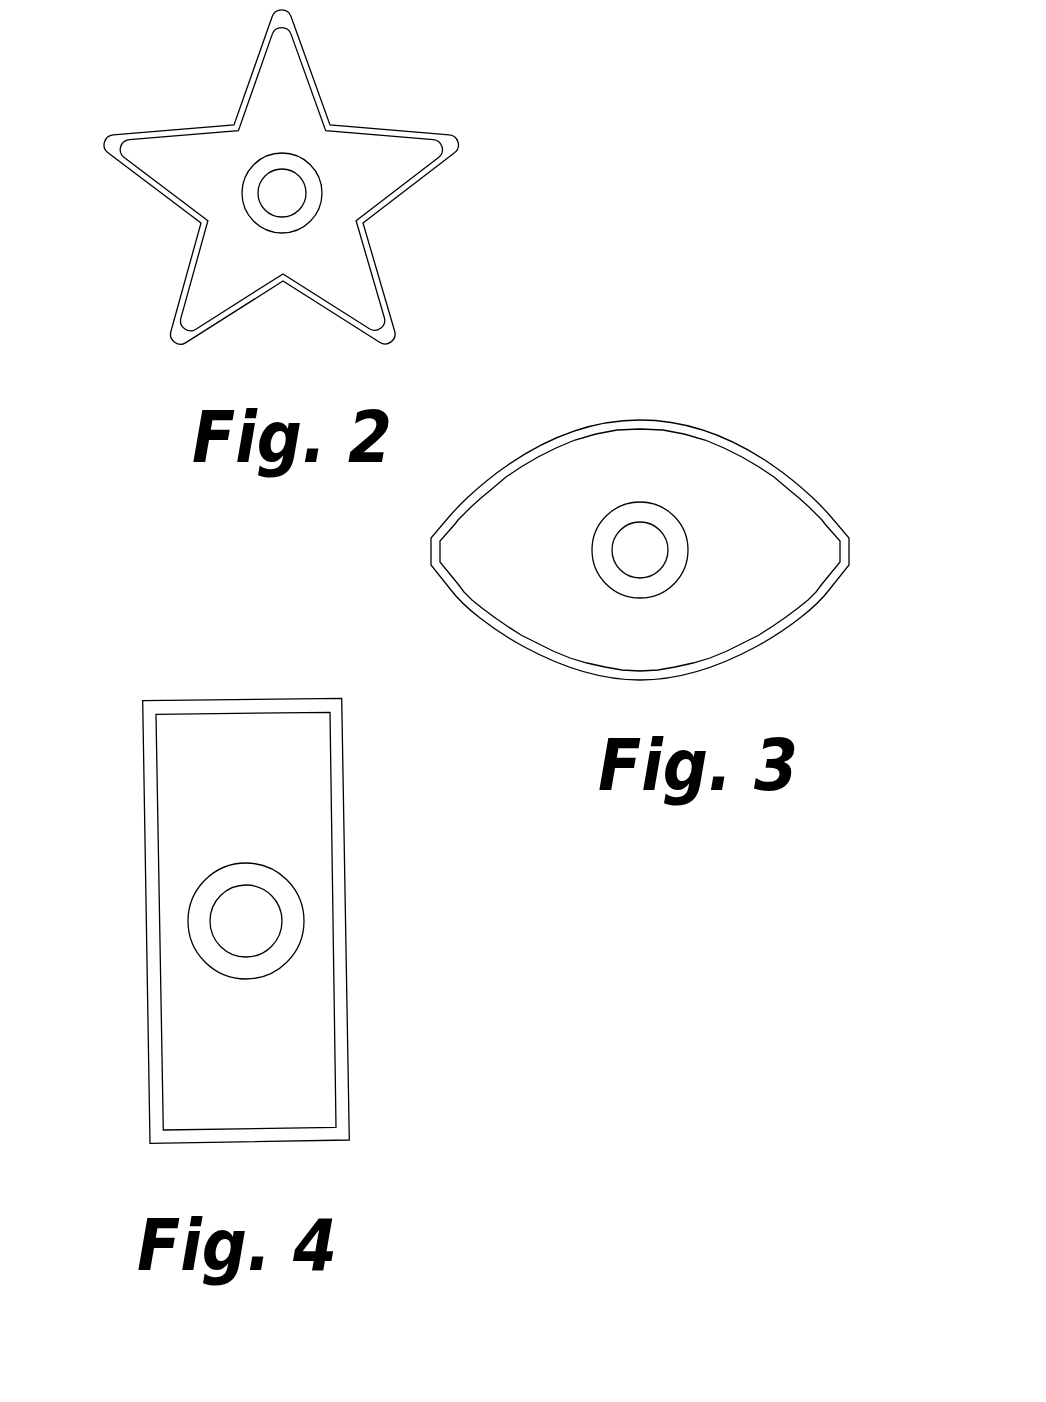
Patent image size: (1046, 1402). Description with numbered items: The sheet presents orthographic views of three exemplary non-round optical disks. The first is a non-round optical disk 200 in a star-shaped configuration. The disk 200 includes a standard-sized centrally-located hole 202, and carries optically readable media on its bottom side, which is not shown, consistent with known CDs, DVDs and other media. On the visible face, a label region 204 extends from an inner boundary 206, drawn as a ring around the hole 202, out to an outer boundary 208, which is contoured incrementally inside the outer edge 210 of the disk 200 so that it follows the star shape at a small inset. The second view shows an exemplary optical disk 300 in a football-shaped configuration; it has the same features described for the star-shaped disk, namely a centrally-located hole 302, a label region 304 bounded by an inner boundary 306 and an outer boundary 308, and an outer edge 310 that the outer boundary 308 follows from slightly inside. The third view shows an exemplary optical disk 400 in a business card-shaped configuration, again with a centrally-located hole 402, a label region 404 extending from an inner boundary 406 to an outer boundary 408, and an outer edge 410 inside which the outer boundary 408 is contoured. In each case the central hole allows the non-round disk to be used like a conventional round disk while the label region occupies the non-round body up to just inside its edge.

In FIG. 2, the non-round optical disk 200 is at (390, 60).
In FIG. 2, the centrally-located hole 202 is at (290, 193).
In FIG. 2, the label region 204 is at (335, 257).
In FIG. 2, the inner boundary 206 is at (255, 222).
In FIG. 2, the outer boundary 208 is at (182, 200).
In FIG. 2, the outer edge 210 is at (162, 127).
In FIG. 3, the optical disk 300 is at (742, 413).
In FIG. 3, the centrally-located hole 302 is at (647, 550).
In FIG. 3, the label region 304 is at (712, 615).
In FIG. 3, the inner boundary 306 is at (612, 587).
In FIG. 3, the outer boundary 308 is at (472, 597).
In FIG. 3, the outer edge 310 is at (449, 522).
In FIG. 4, the optical disk 400 is at (362, 794).
In FIG. 4, the centrally-located hole 402 is at (250, 919).
In FIG. 4, the label region 404 is at (285, 1040).
In FIG. 4, the inner boundary 406 is at (223, 977).
In FIG. 4, the outer boundary 408 is at (158, 977).
In FIG. 4, the outer edge 410 is at (146, 858).